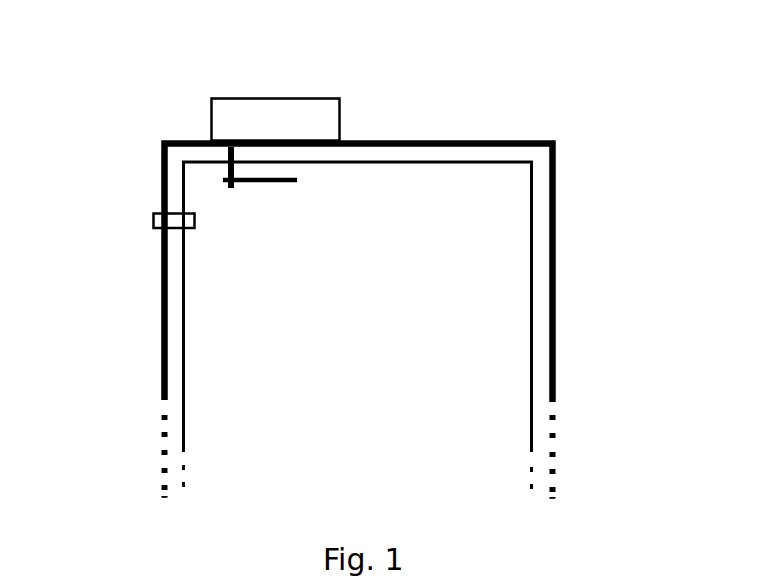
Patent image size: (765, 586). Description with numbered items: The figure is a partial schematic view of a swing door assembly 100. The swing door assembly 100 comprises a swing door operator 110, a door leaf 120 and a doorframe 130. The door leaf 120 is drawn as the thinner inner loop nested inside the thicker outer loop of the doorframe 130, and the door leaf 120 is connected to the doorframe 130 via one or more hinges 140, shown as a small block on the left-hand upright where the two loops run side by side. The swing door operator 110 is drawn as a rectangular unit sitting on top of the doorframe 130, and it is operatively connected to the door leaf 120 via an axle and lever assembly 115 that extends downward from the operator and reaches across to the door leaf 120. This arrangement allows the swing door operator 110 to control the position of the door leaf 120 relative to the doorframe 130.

The swing door assembly 100 is at (575, 84).
The swing door operator 110 is at (200, 110).
The axle and lever assembly 115 is at (234, 186).
The door leaf 120 is at (183, 300).
The doorframe 130 is at (162, 250).
The hinge 140 is at (155, 213).